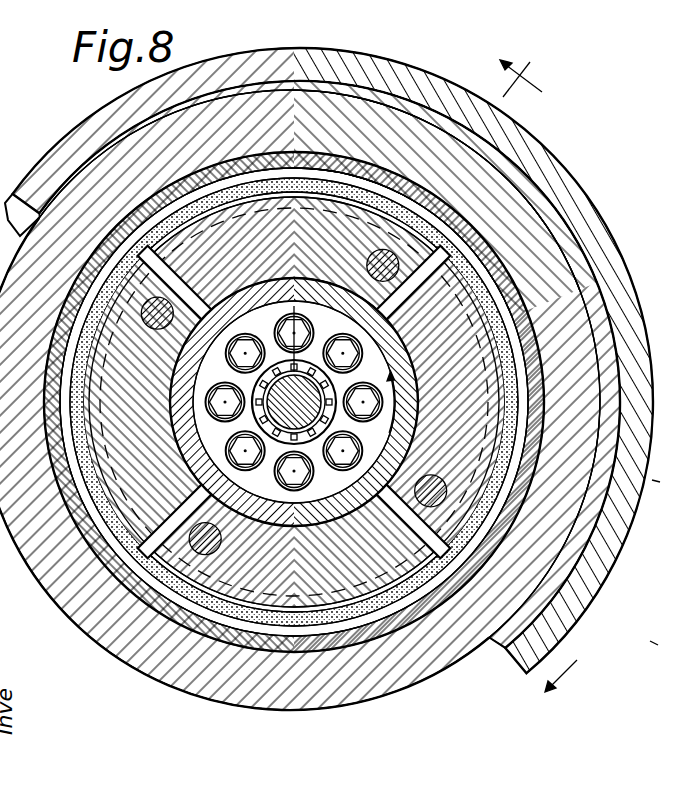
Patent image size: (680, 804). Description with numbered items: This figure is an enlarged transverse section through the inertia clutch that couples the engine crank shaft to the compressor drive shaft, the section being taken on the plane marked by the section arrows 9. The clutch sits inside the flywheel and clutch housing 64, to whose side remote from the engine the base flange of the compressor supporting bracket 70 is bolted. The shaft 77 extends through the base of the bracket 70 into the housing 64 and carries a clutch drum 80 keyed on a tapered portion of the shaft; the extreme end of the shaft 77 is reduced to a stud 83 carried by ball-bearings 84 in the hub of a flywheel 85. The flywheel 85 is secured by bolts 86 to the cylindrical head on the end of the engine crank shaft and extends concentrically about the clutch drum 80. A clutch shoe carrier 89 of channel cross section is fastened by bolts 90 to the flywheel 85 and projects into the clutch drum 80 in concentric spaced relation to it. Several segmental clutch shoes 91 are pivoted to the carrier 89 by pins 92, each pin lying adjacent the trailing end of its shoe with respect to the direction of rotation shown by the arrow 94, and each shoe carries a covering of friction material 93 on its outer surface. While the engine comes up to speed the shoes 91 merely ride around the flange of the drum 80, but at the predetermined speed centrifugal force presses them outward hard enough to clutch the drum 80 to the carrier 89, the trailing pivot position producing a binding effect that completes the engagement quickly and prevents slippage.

The flywheel and clutch housing 64 is at (583, 592).
The compressor supporting bracket 70 is at (665, 646).
The shaft 77 is at (666, 484).
The clutch drum 80 is at (277, 637).
The stud 83 is at (290, 418).
The ball-bearings 84 is at (313, 338).
The flywheel 85 is at (318, 697).
The bolts 86 is at (229, 376).
The clutch shoe carrier 89 is at (228, 408).
The bolts 90 is at (287, 333).
The clutch shoes 91 is at (372, 206).
The pins 92 is at (183, 322).
The friction material 93 is at (393, 212).
The arrow 94 is at (389, 434).
The section line 9 is at (541, 382).